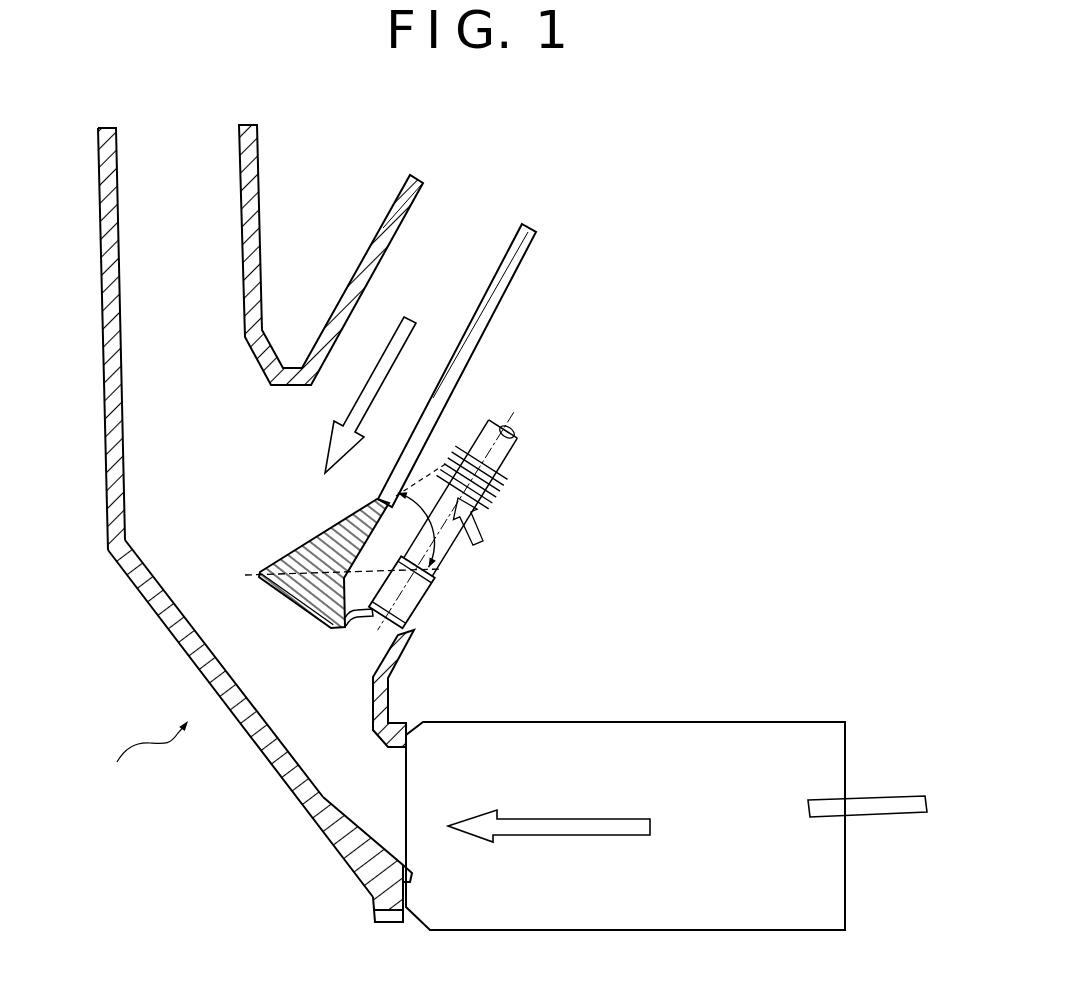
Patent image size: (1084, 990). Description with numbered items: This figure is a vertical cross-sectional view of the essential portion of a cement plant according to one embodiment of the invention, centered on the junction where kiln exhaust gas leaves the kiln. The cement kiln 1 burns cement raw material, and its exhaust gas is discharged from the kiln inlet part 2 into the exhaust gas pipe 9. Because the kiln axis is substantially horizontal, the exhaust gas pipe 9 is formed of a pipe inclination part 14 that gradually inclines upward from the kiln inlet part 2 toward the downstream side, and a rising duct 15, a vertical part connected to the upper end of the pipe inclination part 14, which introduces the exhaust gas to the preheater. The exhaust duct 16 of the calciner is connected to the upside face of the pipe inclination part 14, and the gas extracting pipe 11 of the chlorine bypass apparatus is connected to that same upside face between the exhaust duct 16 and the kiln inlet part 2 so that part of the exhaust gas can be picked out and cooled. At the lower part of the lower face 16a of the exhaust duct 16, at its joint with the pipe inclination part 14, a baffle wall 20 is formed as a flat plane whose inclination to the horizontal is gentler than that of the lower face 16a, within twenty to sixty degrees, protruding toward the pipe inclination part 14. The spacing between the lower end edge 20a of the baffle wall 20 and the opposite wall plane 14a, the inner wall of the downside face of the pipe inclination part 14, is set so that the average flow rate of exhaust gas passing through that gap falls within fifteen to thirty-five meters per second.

The cement kiln 1 is at (673, 722).
The kiln inlet part 2 is at (418, 722).
The exhaust gas pipe 9 is at (142, 753).
The gas extracting pipe 11 is at (514, 441).
The pipe inclination part 14 is at (264, 757).
The opposite wall plane 14a is at (190, 621).
The rising duct 15 is at (99, 194).
The exhaust duct 16 is at (514, 277).
The lower face 16a is at (495, 343).
The baffle wall 20 is at (323, 526).
The lower end edge 20a is at (252, 567).